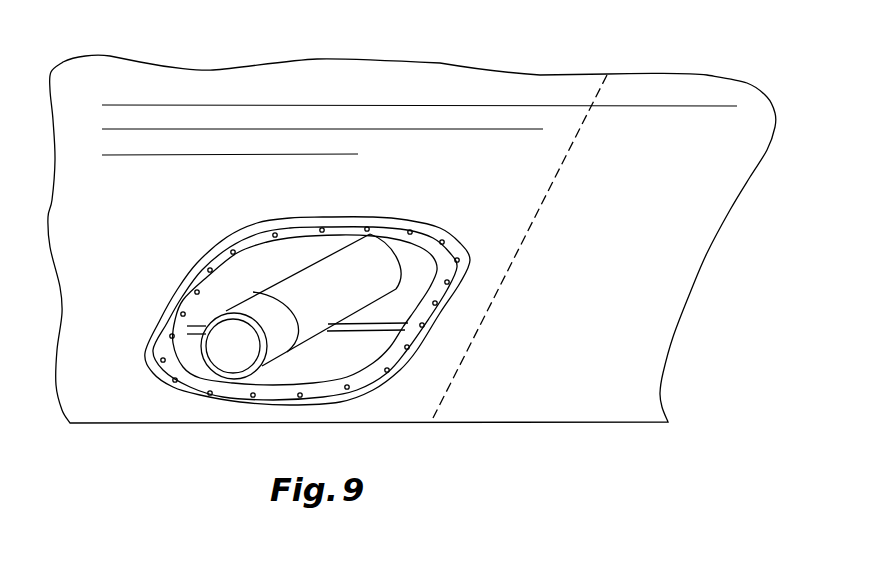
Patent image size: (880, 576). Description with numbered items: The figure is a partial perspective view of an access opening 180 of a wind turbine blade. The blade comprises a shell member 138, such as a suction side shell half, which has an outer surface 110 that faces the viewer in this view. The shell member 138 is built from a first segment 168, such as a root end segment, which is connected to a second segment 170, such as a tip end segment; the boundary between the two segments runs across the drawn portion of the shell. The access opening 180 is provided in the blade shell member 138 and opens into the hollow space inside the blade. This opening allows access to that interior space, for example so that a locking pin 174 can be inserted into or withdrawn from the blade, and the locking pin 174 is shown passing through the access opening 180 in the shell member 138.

The outer surface 110 is at (450, 188).
The first segment 168 is at (377, 72).
The second segment 170 is at (670, 85).
The shell member 138 is at (110, 413).
The access opening 180 is at (178, 261).
The locking pin 174 is at (225, 362).